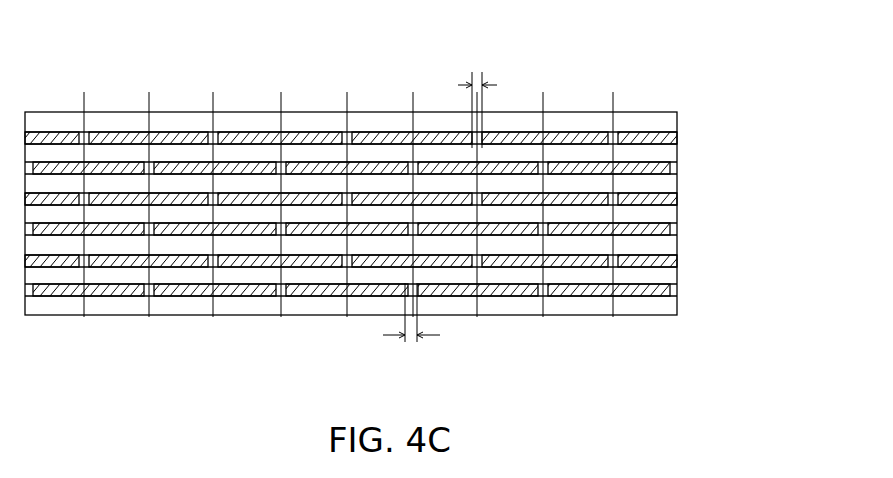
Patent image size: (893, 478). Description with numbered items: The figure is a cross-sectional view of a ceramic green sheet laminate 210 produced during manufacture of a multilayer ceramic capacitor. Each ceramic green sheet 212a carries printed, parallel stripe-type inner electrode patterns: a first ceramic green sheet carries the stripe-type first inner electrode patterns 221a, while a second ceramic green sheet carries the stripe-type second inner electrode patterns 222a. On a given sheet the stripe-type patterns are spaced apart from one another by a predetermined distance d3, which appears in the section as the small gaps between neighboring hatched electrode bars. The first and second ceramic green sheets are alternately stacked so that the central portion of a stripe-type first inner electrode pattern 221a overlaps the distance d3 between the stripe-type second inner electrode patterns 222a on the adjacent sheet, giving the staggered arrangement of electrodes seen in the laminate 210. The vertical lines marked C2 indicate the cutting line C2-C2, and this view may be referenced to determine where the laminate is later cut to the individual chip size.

The ceramic green sheet laminate 210 is at (99, 42).
The ceramic green sheet 212a is at (663, 215).
The stripe-type first inner electrode pattern 221a is at (673, 230).
The stripe-type second inner electrode pattern 222a is at (660, 189).
The cutting line C2 is at (179, 208).
The predetermined distance d3 is at (440, 209).